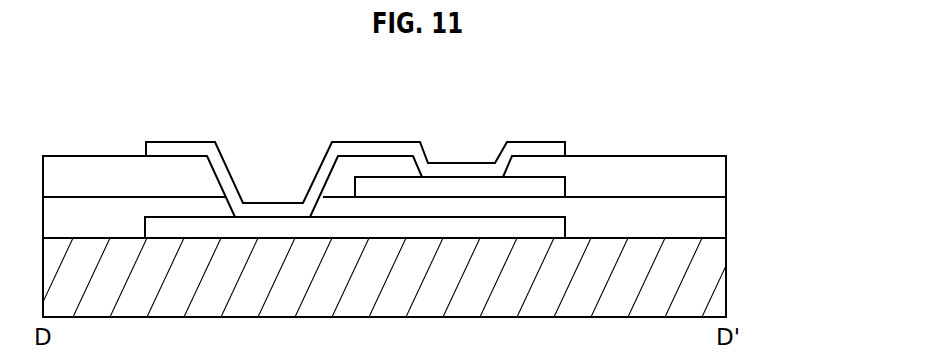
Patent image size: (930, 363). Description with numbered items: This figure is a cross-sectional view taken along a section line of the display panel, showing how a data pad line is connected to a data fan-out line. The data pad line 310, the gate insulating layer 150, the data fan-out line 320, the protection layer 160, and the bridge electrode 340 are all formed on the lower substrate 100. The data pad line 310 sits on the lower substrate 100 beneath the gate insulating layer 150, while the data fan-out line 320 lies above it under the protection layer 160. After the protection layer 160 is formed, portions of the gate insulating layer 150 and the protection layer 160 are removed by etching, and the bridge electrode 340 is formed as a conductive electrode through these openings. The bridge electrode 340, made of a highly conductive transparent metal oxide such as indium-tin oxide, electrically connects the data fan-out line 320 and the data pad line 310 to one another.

The lower substrate 100 is at (708, 280).
The gate insulating layer 150 is at (710, 218).
The protection layer 160 is at (710, 177).
The data pad line 310 is at (462, 228).
The data fan-out line 320 is at (540, 187).
The bridge electrode 340 is at (172, 150).